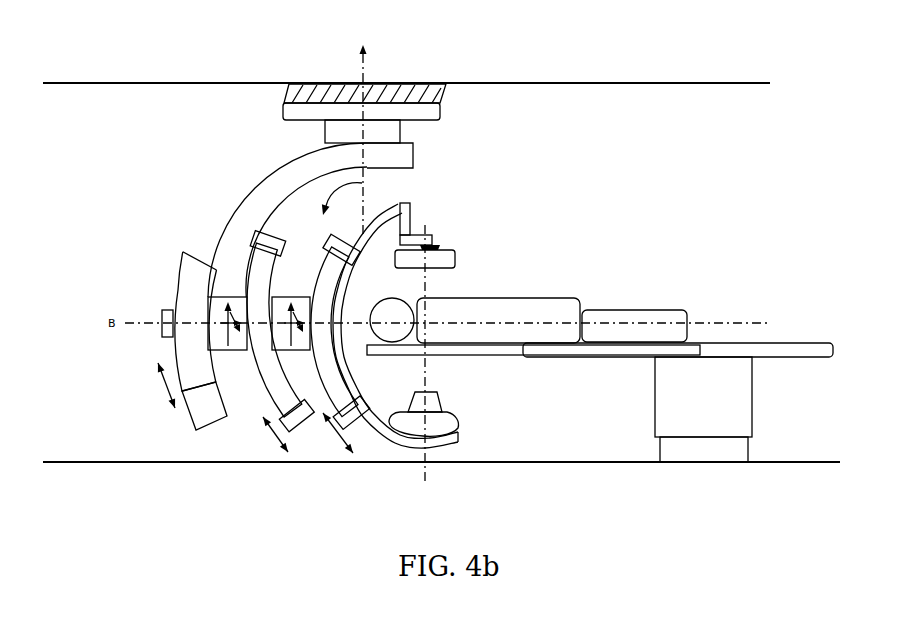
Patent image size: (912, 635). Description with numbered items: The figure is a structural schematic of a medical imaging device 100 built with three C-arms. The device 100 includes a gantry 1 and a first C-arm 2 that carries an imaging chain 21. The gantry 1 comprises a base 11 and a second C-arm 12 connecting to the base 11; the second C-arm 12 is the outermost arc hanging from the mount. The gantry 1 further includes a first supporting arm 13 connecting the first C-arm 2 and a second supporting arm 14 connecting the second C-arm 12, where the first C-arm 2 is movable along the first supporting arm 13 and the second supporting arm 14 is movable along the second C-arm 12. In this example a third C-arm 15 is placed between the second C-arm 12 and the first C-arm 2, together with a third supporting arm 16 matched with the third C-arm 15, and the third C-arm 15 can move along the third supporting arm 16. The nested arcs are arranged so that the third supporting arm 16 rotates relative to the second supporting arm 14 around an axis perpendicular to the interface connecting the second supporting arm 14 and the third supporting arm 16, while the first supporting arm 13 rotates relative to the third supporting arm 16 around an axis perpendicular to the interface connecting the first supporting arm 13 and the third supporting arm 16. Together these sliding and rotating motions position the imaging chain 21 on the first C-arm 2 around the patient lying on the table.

The medical imaging device 100 is at (236, 133).
The gantry 1 is at (235, 195).
The first C-arm 2 is at (370, 432).
The base 11 is at (388, 115).
The second C-arm 12 is at (193, 238).
The first supporting arm 13 is at (327, 380).
The second supporting arm 14 is at (183, 352).
The third C-arm 15 is at (359, 190).
The third supporting arm 16 is at (265, 377).
The imaging chain 21 is at (440, 250).